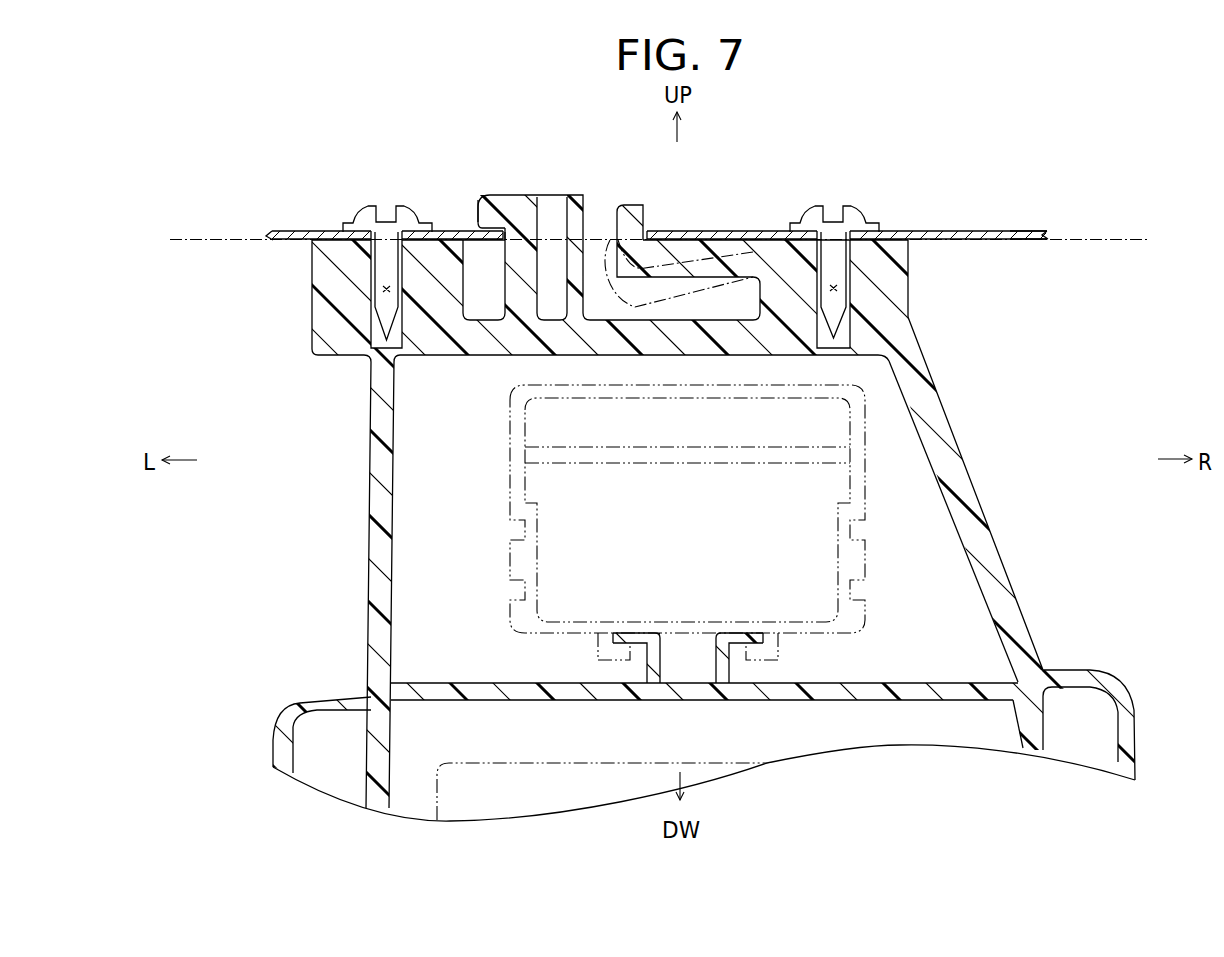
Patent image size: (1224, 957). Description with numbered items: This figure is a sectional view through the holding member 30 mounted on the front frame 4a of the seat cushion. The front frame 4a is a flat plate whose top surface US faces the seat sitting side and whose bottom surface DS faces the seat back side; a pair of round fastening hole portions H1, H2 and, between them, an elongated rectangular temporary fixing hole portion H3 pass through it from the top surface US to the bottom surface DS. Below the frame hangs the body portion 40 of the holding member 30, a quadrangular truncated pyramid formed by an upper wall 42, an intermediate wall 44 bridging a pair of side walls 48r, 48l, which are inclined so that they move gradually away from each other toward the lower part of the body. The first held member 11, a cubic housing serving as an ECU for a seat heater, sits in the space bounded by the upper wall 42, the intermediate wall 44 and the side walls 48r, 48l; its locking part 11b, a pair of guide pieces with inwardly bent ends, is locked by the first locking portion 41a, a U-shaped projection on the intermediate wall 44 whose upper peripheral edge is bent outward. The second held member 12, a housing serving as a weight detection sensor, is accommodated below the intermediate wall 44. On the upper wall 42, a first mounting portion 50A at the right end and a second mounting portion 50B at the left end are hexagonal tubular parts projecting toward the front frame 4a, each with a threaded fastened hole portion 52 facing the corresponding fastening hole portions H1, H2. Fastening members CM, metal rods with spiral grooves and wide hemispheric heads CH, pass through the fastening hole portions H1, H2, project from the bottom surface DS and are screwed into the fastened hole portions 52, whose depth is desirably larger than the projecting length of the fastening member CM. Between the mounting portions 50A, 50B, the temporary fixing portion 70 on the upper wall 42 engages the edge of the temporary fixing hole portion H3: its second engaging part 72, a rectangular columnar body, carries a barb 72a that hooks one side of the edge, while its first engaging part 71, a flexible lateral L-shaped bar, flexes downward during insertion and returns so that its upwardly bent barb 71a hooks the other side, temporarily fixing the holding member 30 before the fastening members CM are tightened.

The holding member 30 is at (953, 385).
The body portion 40 is at (953, 440).
The upper wall 42 is at (482, 343).
The intermediate wall 44 is at (428, 690).
The side wall 48l is at (375, 553).
The side wall 48r is at (990, 548).
The first mounting portion 50A is at (880, 267).
The second mounting portion 50B is at (336, 266).
The fastened hole portion 52 is at (383, 289).
The head CH is at (407, 217).
The fastening member CM is at (367, 267).
The fastening hole portion H1 is at (820, 213).
The fastening hole portion H2 is at (375, 207).
The temporary fixing hole portion H3 is at (520, 238).
The temporary fixing portion 70 is at (663, 122).
The first engaging part 71 is at (697, 257).
The barb 71a is at (647, 223).
The second engaging part 72 is at (570, 195).
The barb 72a is at (478, 223).
The first locking portion 41a is at (725, 637).
The front frame 4a is at (943, 229).
The top surface US is at (1022, 229).
The bottom surface DS is at (1033, 239).
The first held member 11 is at (513, 495).
The locking part 11b is at (597, 645).
The second held member 12 is at (577, 767).